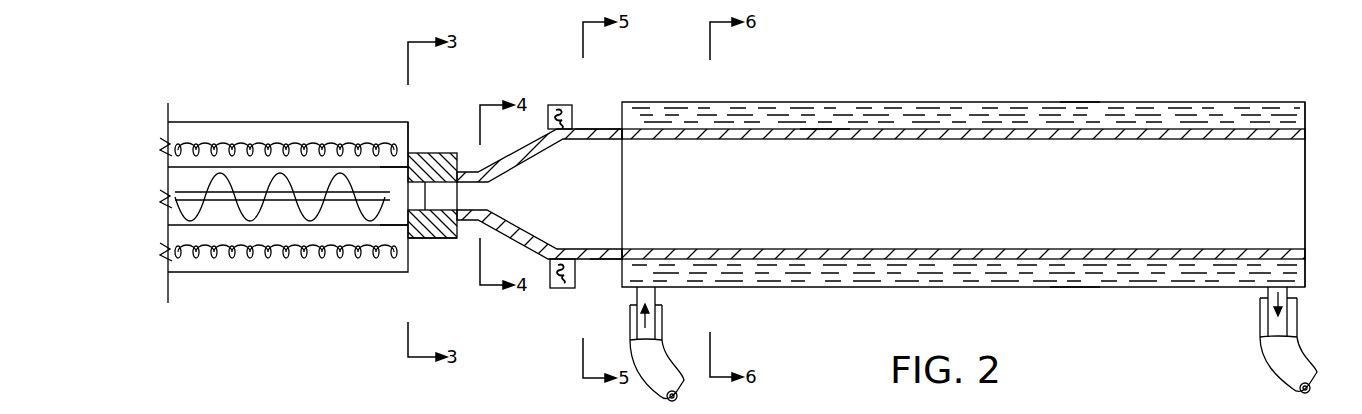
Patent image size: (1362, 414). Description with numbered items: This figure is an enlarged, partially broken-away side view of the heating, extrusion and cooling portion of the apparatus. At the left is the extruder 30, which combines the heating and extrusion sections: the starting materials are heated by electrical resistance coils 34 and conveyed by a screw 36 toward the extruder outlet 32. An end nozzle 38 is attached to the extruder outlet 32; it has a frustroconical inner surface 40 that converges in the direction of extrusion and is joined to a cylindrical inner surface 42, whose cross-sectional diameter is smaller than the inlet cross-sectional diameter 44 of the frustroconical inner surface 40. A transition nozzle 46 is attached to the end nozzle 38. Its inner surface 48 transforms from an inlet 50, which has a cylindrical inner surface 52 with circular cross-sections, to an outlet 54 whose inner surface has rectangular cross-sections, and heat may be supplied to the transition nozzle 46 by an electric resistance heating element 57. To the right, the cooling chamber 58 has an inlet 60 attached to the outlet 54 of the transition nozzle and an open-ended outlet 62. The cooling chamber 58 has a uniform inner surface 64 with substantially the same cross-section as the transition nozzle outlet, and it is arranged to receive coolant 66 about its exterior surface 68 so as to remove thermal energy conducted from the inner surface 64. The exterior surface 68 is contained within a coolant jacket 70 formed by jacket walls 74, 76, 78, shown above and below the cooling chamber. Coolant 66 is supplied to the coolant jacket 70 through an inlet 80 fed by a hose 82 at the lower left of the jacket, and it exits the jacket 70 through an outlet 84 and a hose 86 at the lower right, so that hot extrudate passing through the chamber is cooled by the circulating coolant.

The extruder 30 is at (208, 122).
The extruder outlet 32 is at (411, 127).
The electrical resistance coils 34 is at (288, 136).
The screw 36 is at (252, 220).
The end nozzle 38 is at (423, 238).
The frustroconical inner surface 40 is at (428, 155).
The cylindrical inner surface 42 is at (453, 240).
The inlet cross-sectional diameter 44 is at (397, 225).
The transition nozzle 46 is at (591, 128).
The inner surface 48 is at (550, 262).
The inlet 50 is at (472, 172).
The cylindrical inner surface 52 is at (468, 209).
The outlet 54 is at (608, 127).
The electric resistance heating element 57 is at (562, 105).
The cooling chamber 58 is at (892, 102).
The inlet 60 is at (609, 262).
The outlet 62 is at (1307, 139).
The inner surface 64 is at (1010, 140).
The coolant 66 is at (1146, 116).
The exterior surface 68 is at (823, 129).
The coolant jacket 70 is at (762, 102).
The jacket wall 74 is at (1176, 272).
The jacket wall 76 is at (1081, 288).
The jacket wall 78 is at (1082, 102).
The inlet 80 is at (659, 300).
The hose 82 is at (666, 392).
The outlet 84 is at (1299, 300).
The hose 86 is at (1290, 366).